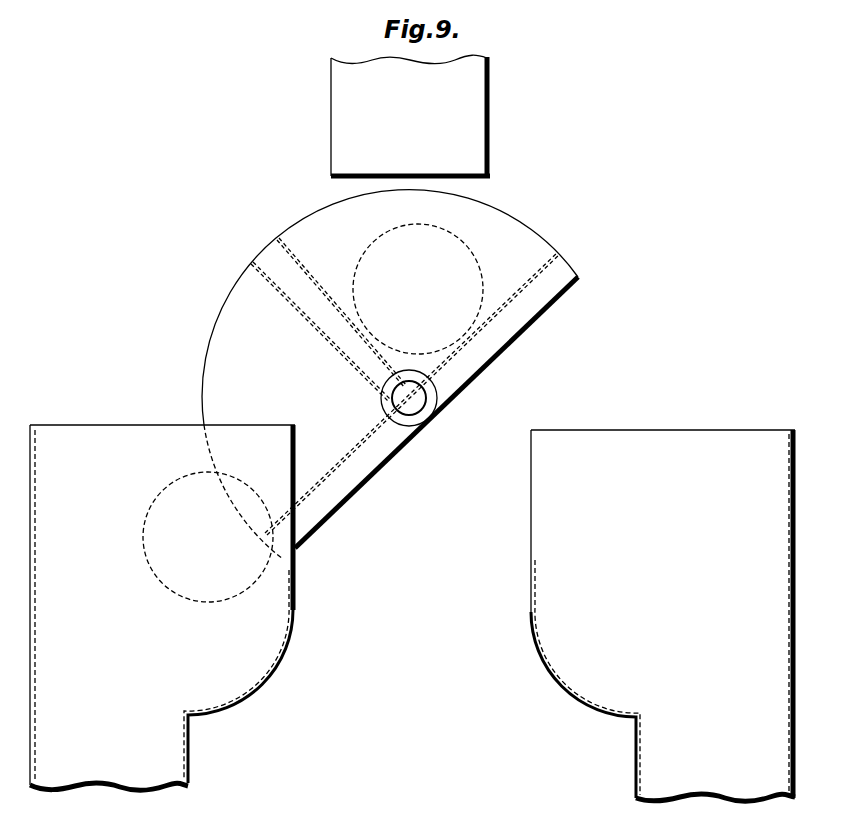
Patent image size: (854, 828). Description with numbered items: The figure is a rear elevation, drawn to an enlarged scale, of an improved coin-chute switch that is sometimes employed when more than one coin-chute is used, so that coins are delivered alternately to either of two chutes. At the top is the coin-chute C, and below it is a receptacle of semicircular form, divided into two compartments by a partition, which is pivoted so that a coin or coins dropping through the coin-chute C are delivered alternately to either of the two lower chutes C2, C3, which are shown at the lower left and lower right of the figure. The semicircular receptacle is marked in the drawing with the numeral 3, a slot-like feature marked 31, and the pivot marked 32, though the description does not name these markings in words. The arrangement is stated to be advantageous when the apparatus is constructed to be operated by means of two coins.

The coin-chute C is at (410, 116).
The chute C2 is at (162, 607).
The chute C3 is at (663, 615).
The circular opening 3 is at (418, 289).
The radial slot 31 is at (329, 320).
The pivot hole 32 is at (409, 398).